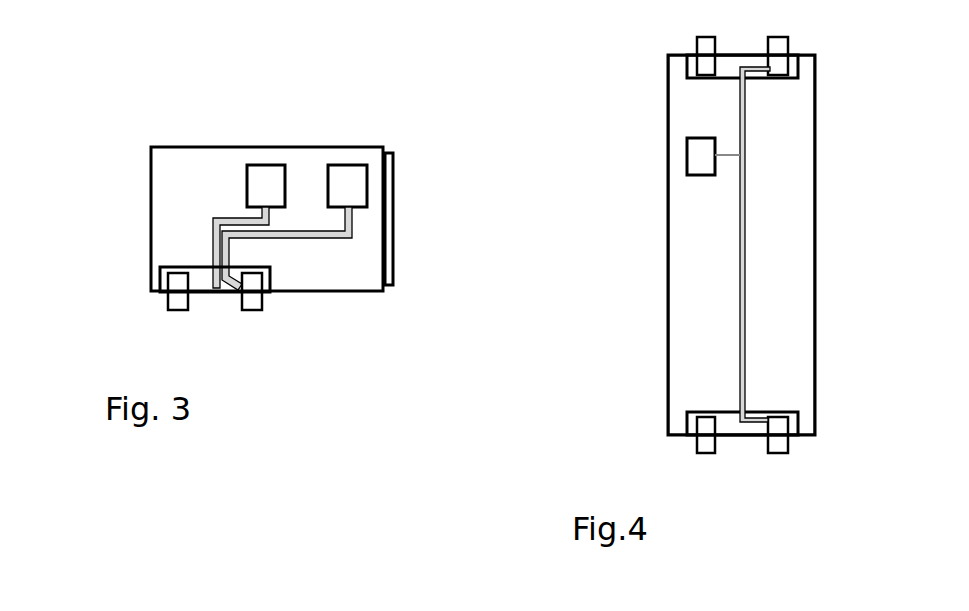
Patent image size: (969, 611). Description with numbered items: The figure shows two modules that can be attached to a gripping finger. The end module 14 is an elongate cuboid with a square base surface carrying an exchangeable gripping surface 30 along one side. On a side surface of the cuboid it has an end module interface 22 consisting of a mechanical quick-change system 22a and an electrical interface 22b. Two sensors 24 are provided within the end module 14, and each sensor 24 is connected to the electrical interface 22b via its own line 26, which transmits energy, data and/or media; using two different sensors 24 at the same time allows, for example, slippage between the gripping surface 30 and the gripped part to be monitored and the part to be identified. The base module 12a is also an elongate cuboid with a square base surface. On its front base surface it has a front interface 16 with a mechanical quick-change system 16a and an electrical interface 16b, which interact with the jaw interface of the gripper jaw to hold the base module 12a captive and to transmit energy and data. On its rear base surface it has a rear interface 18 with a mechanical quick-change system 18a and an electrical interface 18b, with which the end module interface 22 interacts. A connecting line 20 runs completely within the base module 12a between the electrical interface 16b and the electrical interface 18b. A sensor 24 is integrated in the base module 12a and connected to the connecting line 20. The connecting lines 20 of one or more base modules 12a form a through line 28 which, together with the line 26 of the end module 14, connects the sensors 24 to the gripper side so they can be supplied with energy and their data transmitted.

In FIG. 3, the end module 14 is at (72, 67).
In FIG. 3, the gripping surface 30 is at (393, 220).
In FIG. 3, the sensor 24 is at (265, 182).
In FIG. 4, the sensor 24 is at (687, 153).
In FIG. 3, the line 26 is at (228, 220).
In FIG. 3, the end module interface 22 is at (197, 265).
In FIG. 3, the mechanical quick-change system 22a is at (173, 311).
In FIG. 3, the electrical interface 22b is at (249, 311).
In FIG. 4, the base module 12a is at (570, 15).
In FIG. 4, the connecting line 20 is at (743, 213).
In FIG. 4, the rear interface 18 is at (777, 78).
In FIG. 4, the mechanical quick-change system 18a is at (703, 36).
In FIG. 4, the electrical interface 18b is at (780, 36).
In FIG. 4, the front interface 16 is at (773, 412).
In FIG. 4, the mechanical quick-change system 16a is at (702, 455).
In FIG. 4, the electrical interface 16b is at (777, 455).
In FIG. 4, the through line 28 is at (743, 240).